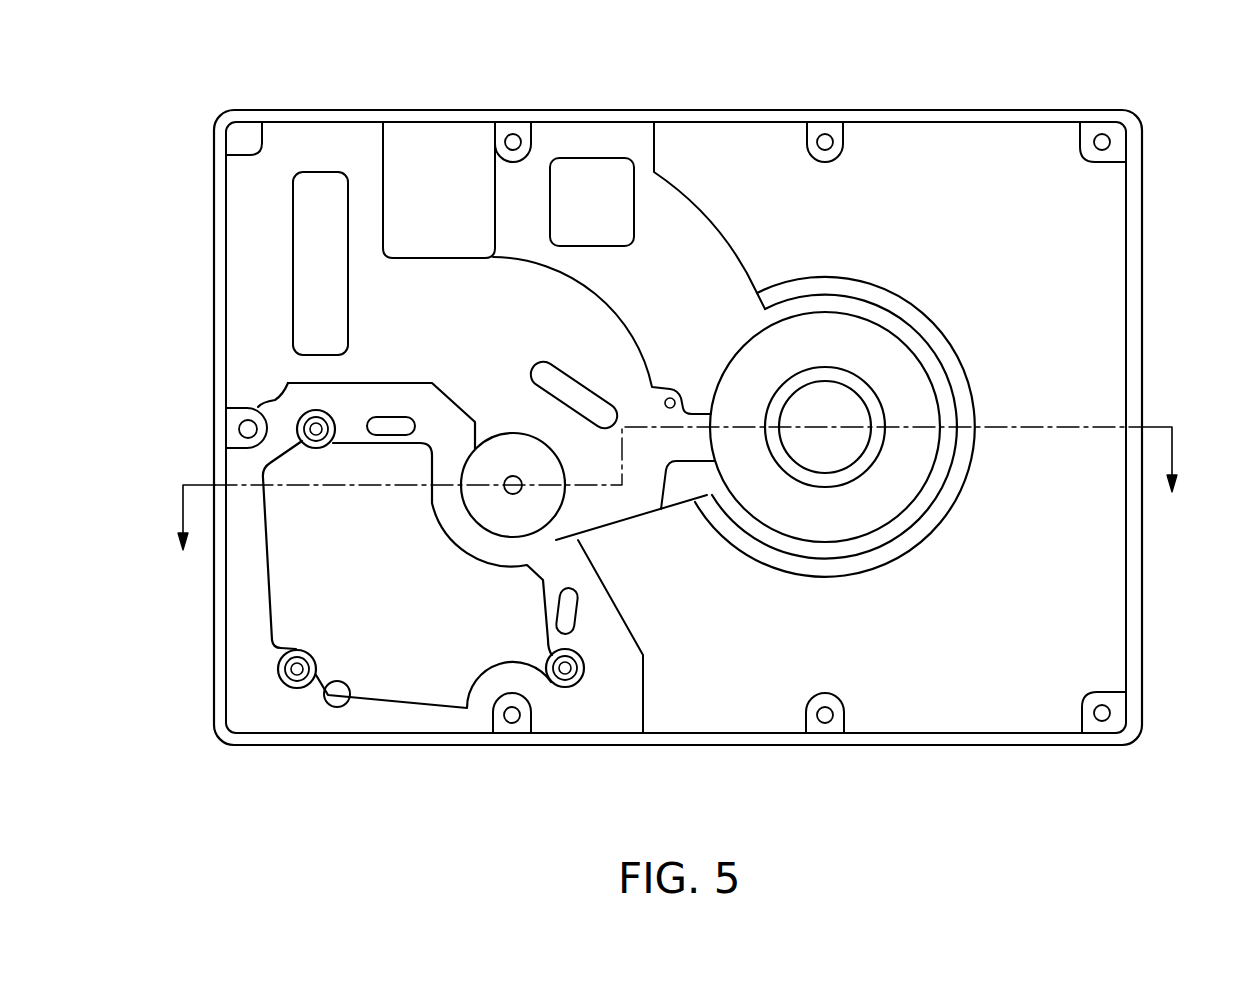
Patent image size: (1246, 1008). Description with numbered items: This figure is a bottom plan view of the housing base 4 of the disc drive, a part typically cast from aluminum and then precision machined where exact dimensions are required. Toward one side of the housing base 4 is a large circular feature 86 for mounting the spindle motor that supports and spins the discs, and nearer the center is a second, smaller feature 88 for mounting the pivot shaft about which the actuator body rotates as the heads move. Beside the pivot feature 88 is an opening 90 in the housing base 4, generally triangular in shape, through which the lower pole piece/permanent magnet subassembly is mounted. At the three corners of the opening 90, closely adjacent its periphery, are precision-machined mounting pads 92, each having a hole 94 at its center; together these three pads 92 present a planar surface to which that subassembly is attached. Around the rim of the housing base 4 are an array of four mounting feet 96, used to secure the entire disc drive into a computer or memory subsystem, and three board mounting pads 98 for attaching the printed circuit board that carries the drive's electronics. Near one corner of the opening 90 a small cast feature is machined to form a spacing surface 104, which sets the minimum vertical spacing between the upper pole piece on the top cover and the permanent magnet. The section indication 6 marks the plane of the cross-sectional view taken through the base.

The housing base 4 is at (1147, 578).
The section line 6- 6 is at (675, 488).
The spindle motor mounting feature 86 is at (950, 291).
The pivot shaft mounting feature 88 is at (516, 468).
The opening 90 is at (304, 606).
The mounting pads 92 is at (302, 406).
The holes 94 is at (302, 442).
The mounting feet 96 is at (514, 126).
The board mounting pads 98 is at (1112, 144).
The spacing surface 104 is at (344, 682).